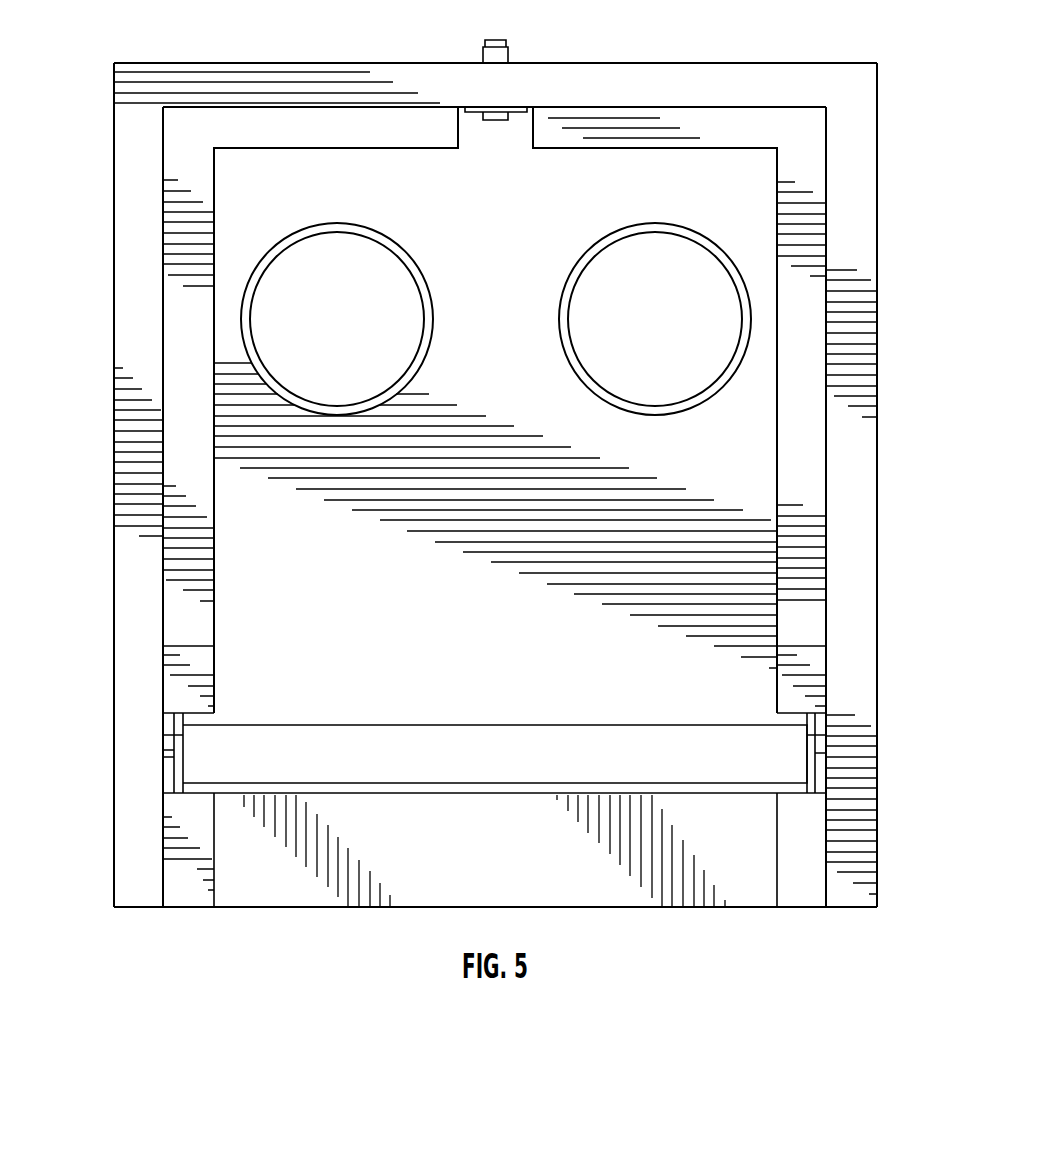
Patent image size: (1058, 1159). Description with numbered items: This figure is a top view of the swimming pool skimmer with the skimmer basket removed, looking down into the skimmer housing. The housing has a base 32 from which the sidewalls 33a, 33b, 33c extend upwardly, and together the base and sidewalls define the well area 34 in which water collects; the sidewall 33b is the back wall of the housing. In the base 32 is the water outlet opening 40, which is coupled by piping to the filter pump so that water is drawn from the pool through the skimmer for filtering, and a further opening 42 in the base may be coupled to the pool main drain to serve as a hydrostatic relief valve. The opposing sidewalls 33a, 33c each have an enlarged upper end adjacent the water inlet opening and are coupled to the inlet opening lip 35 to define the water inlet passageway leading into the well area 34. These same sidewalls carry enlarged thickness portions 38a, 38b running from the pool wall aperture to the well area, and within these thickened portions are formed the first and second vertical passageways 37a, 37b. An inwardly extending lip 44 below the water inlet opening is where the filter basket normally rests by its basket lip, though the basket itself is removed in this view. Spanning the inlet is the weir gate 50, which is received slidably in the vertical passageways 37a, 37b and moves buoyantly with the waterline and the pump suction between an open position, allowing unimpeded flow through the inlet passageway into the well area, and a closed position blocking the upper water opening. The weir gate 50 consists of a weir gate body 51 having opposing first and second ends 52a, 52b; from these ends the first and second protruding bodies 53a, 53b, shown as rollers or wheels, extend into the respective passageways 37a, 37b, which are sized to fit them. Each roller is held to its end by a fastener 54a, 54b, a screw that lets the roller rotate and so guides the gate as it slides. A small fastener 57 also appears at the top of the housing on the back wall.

The base 32 is at (270, 533).
The sidewall 33a is at (118, 203).
The sidewall 33b is at (553, 72).
The sidewall 33c is at (848, 415).
The well area 34 is at (486, 538).
The inlet opening lip 35 is at (410, 862).
The first vertical passageway 37a is at (183, 775).
The second vertical passageway 37b is at (830, 783).
The enlarged thickness portion 38a is at (183, 690).
The enlarged thickness portion 38b is at (812, 655).
The water outlet opening 40 is at (680, 322).
The opening 42 is at (282, 298).
The inwardly extending lip 44 is at (185, 395).
The weir gate 50 is at (302, 783).
The weir gate body 51 is at (560, 762).
The first end 52a is at (200, 775).
The second end 52b is at (790, 770).
The first protruding body 53a is at (183, 735).
The second protruding body 53b is at (812, 735).
The fastener 54a is at (183, 750).
The fastener 54b is at (822, 752).
The fastener 57 is at (484, 62).